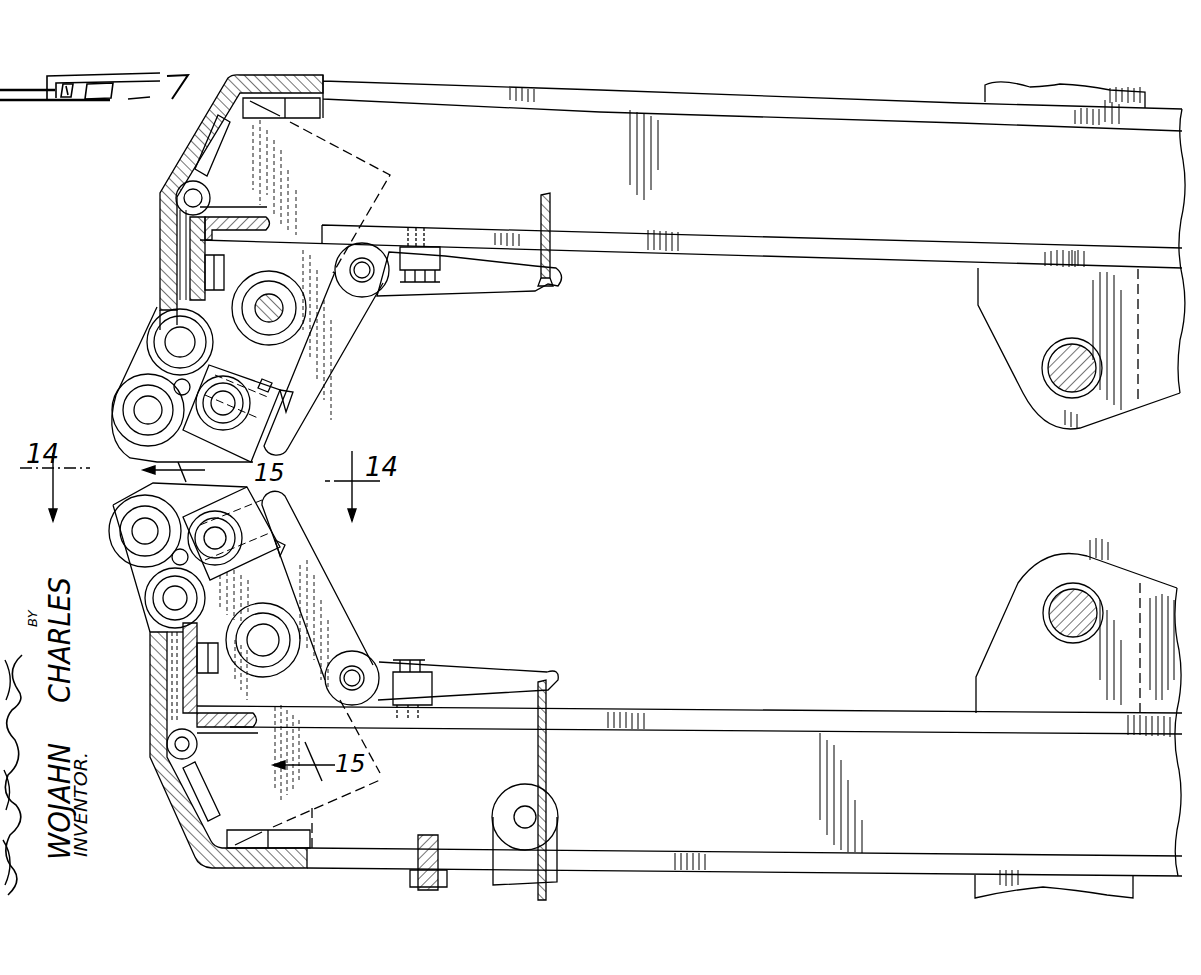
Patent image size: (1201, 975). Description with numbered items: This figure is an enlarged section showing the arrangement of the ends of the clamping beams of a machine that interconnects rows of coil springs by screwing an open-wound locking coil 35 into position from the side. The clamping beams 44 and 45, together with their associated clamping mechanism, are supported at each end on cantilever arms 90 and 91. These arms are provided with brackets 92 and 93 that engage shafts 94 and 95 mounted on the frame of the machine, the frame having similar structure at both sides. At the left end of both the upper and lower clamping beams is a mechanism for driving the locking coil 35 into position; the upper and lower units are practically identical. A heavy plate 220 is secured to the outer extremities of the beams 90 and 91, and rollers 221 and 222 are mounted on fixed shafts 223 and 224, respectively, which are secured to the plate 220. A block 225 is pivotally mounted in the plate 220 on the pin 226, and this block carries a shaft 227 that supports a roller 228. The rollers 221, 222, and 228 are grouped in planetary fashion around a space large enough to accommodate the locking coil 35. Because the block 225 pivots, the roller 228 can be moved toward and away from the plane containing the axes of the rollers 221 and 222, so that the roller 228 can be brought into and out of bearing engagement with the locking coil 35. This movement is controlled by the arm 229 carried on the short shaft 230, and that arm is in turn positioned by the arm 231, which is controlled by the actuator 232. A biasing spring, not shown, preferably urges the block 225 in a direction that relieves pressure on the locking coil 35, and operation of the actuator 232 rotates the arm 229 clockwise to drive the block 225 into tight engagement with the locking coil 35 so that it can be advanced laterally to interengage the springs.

The locking coil 35 is at (150, 372).
The clamping beam 44 is at (182, 804).
The clamping beam 45 is at (162, 205).
The cantilever arm 90 is at (732, 711).
The cantilever arm 91 is at (753, 252).
The bracket 92 is at (997, 648).
The bracket 93 is at (997, 350).
The shaft 94 is at (1058, 380).
The shaft 95 is at (1065, 603).
The heavy plate 220 is at (158, 348).
The roller 221 is at (175, 340).
The roller 222 is at (122, 393).
The fixed shaft 223 is at (190, 290).
The fixed shaft 224 is at (148, 412).
The block 225 is at (292, 395).
The pin 226 is at (274, 372).
The shaft 227 is at (226, 410).
The roller 228 is at (262, 445).
The arm 229 is at (347, 324).
The short shaft 230 is at (366, 280).
The arm 231 is at (500, 282).
The actuator 232 is at (553, 222).